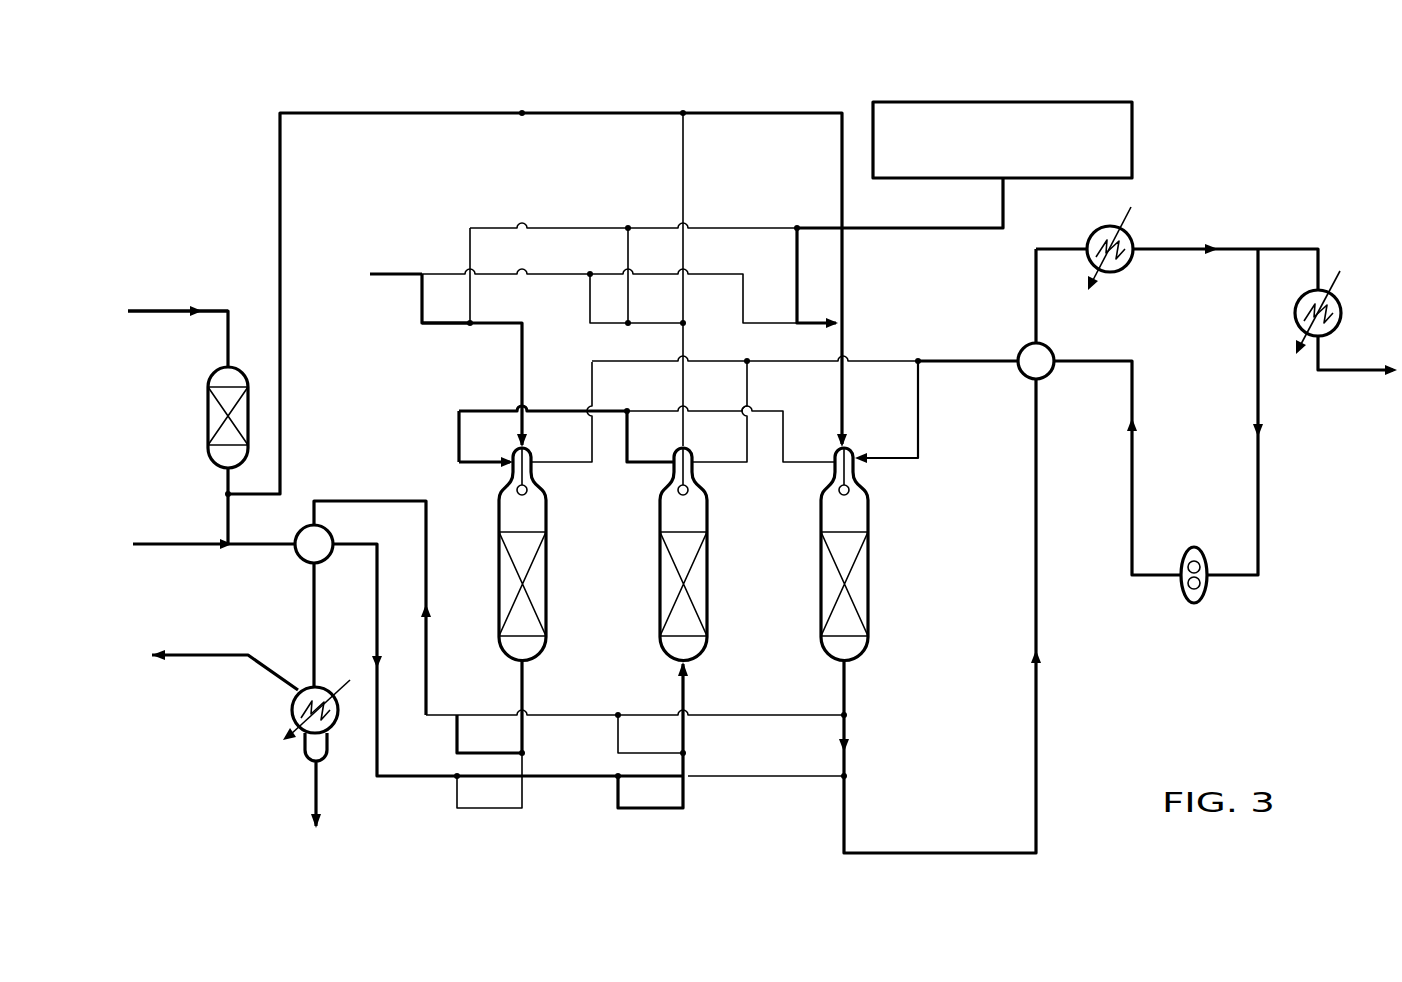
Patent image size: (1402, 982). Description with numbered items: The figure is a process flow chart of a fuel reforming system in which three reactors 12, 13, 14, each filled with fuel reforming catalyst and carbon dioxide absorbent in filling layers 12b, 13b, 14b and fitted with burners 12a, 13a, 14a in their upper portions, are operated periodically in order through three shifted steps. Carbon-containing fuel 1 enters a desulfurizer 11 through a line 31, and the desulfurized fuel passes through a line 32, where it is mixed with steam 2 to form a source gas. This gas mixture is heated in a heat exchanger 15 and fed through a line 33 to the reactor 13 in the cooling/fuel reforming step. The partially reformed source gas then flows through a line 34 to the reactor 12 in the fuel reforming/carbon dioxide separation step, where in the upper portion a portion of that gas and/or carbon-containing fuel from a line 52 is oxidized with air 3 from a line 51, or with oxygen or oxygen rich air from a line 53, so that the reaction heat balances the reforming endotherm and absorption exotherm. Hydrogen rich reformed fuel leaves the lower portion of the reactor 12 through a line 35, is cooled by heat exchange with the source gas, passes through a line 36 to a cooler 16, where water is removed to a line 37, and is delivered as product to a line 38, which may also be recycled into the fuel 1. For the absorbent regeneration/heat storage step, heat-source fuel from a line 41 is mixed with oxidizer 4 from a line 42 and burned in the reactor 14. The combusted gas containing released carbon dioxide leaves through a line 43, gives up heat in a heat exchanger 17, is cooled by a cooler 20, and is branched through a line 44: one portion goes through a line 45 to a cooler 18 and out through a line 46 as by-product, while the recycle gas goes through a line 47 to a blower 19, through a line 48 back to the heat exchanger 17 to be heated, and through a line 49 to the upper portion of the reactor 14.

The carbon-containing fuel 1 is at (169, 312).
The steam 2 is at (203, 549).
The air 3 is at (573, 275).
The oxidizer 4 is at (1132, 138).
The desulfurizer 11 is at (207, 418).
The reactor 12 is at (519, 554).
The burner 12a is at (515, 491).
The filling layer 12b is at (499, 583).
The reactor 13 is at (718, 554).
The burner 13a is at (693, 490).
The filling layer 13b is at (708, 578).
The reactor 14 is at (876, 554).
The burner 14a is at (853, 490).
The filling layer 14b is at (869, 578).
The heat exchanger 15 is at (300, 556).
The cooler 16 is at (305, 756).
The heat exchanger 17 is at (1022, 373).
The cooler 18 is at (1340, 322).
The blower 19 is at (1194, 604).
The cooler 20 is at (1127, 266).
The line 31 is at (164, 309).
The line 32 is at (228, 510).
The line 33 is at (686, 690).
The line 34 is at (627, 463).
The line 35 is at (524, 681).
The line 36 is at (313, 626).
The line 37 is at (318, 794).
The line 38 is at (232, 657).
The line 41 is at (760, 113).
The line 42 is at (797, 250).
The line 43 is at (943, 853).
The line 44 is at (1170, 249).
The line 45 is at (1287, 249).
The line 46 is at (1352, 372).
The line 47 is at (1259, 493).
The line 48 is at (1131, 493).
The line 49 is at (968, 360).
The line 51 is at (432, 324).
The line 52 is at (522, 165).
The line 53 is at (469, 236).